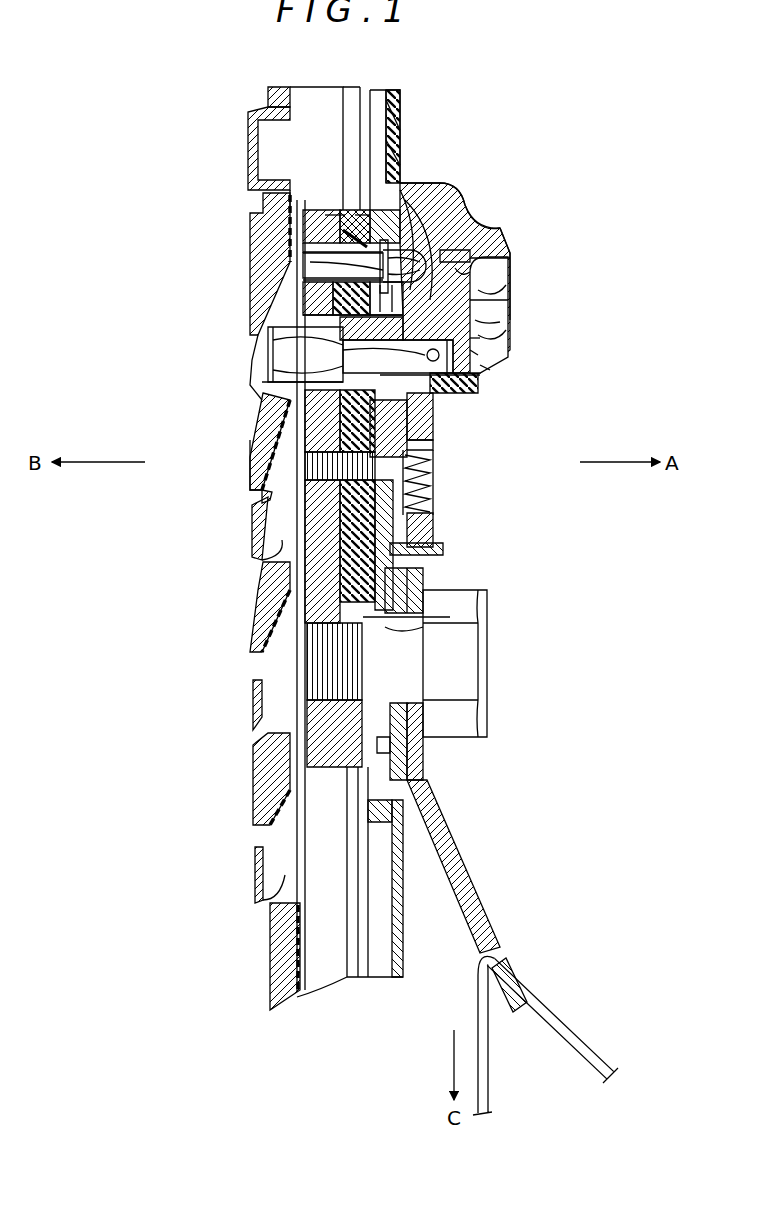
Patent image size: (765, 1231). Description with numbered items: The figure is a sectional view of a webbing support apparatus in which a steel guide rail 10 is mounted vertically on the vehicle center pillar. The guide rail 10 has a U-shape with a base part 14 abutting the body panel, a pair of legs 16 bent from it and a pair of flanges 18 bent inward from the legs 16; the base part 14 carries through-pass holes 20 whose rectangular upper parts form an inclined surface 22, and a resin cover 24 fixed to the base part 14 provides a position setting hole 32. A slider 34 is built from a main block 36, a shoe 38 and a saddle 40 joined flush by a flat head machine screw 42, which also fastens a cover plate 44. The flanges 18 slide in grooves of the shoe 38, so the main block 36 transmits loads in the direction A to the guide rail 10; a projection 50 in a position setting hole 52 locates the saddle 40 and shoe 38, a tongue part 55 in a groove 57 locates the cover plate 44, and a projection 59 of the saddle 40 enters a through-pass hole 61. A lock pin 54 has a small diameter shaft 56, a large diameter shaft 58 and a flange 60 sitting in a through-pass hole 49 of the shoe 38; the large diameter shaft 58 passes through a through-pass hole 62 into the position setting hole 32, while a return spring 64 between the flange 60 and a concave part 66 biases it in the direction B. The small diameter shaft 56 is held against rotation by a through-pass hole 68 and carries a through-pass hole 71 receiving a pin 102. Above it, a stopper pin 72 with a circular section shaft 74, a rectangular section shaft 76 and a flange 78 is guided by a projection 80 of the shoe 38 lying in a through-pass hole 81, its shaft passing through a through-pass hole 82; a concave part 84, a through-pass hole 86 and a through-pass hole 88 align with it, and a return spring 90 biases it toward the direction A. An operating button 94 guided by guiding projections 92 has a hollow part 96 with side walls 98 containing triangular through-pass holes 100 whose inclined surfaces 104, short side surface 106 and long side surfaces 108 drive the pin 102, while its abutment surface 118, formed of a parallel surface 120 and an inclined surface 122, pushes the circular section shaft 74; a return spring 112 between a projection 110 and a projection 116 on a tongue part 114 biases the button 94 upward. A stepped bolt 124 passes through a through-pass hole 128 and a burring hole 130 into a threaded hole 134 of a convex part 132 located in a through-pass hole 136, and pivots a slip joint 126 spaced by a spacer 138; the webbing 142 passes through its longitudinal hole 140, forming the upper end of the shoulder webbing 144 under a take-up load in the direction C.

The guide rail 10 is at (262, 101).
The cover 24 is at (288, 86).
The legs 16 is at (306, 92).
The flanges 18 is at (352, 203).
The shoe 38 is at (378, 203).
The cover plate 44 is at (410, 96).
The slider 34 is at (400, 128).
The saddle 40 is at (398, 150).
The concave part 84 is at (400, 205).
The through-pass hole 86 is at (408, 235).
The inclined surface 122 is at (430, 185).
The circular section shaft 74 is at (445, 198).
The flange 78 is at (455, 205).
The through-pass hole 88 is at (458, 220).
The operating button 94 is at (502, 226).
The projection 59 is at (505, 250).
The return spring 64 is at (490, 243).
The lock pin 54 is at (480, 262).
The hollow part 96 is at (512, 258).
The through-pass holes 100 is at (480, 272).
The small diameter shaft 56 is at (500, 303).
The side walls 98 is at (505, 310).
The long side surfaces 108 is at (500, 328).
The inclined surfaces 104 is at (480, 338).
The pin 102 is at (477, 352).
The short side surface 106 is at (485, 367).
The through-pass hole 71 is at (475, 378).
The base part 14 is at (262, 207).
The stopper pin 72 is at (312, 243).
The projection 80 is at (310, 210).
The main block 36 is at (330, 210).
The return spring 90 is at (355, 208).
The rectangular section shaft 76 is at (315, 263).
The through-pass hole 81 is at (335, 268).
The through-pass hole 82 is at (305, 285).
The abutment surface 118 is at (335, 348).
The flange 60 is at (272, 362).
The through-pass hole 62 is at (290, 337).
The parallel surface 120 is at (282, 380).
The through-pass hole 49 is at (265, 402).
The large diameter shaft 58 is at (262, 312).
The concave part 66 is at (276, 430).
The inclined surface 22 is at (268, 462).
The position setting hole 32 is at (262, 494).
The through-pass holes 20 is at (262, 522).
The position setting hole 52 is at (342, 765).
The projection 50 is at (360, 790).
The flat head machine screw 42 is at (440, 460).
The guiding projections 92 is at (440, 482).
The through-pass hole 68 is at (430, 405).
The through-pass hole 61 is at (440, 420).
The projection 110 is at (450, 440).
The return spring 112 is at (440, 502).
The projection 116 is at (440, 525).
The tongue part 114 is at (430, 550).
The convex part 132 is at (420, 578).
The burring hole 130 is at (455, 618).
The stepped bolt 124 is at (470, 650).
The threaded hole 134 is at (310, 667).
The through-pass hole 136 is at (300, 703).
The spacer 138 is at (460, 717).
The through-pass hole 128 is at (440, 752).
The tongue part 55 is at (345, 835).
The groove 57 is at (380, 820).
The slip joint 126 is at (460, 856).
The longitudinal hole 140 is at (497, 935).
The webbing 142 is at (542, 968).
The shoulder webbing 144 is at (575, 1025).